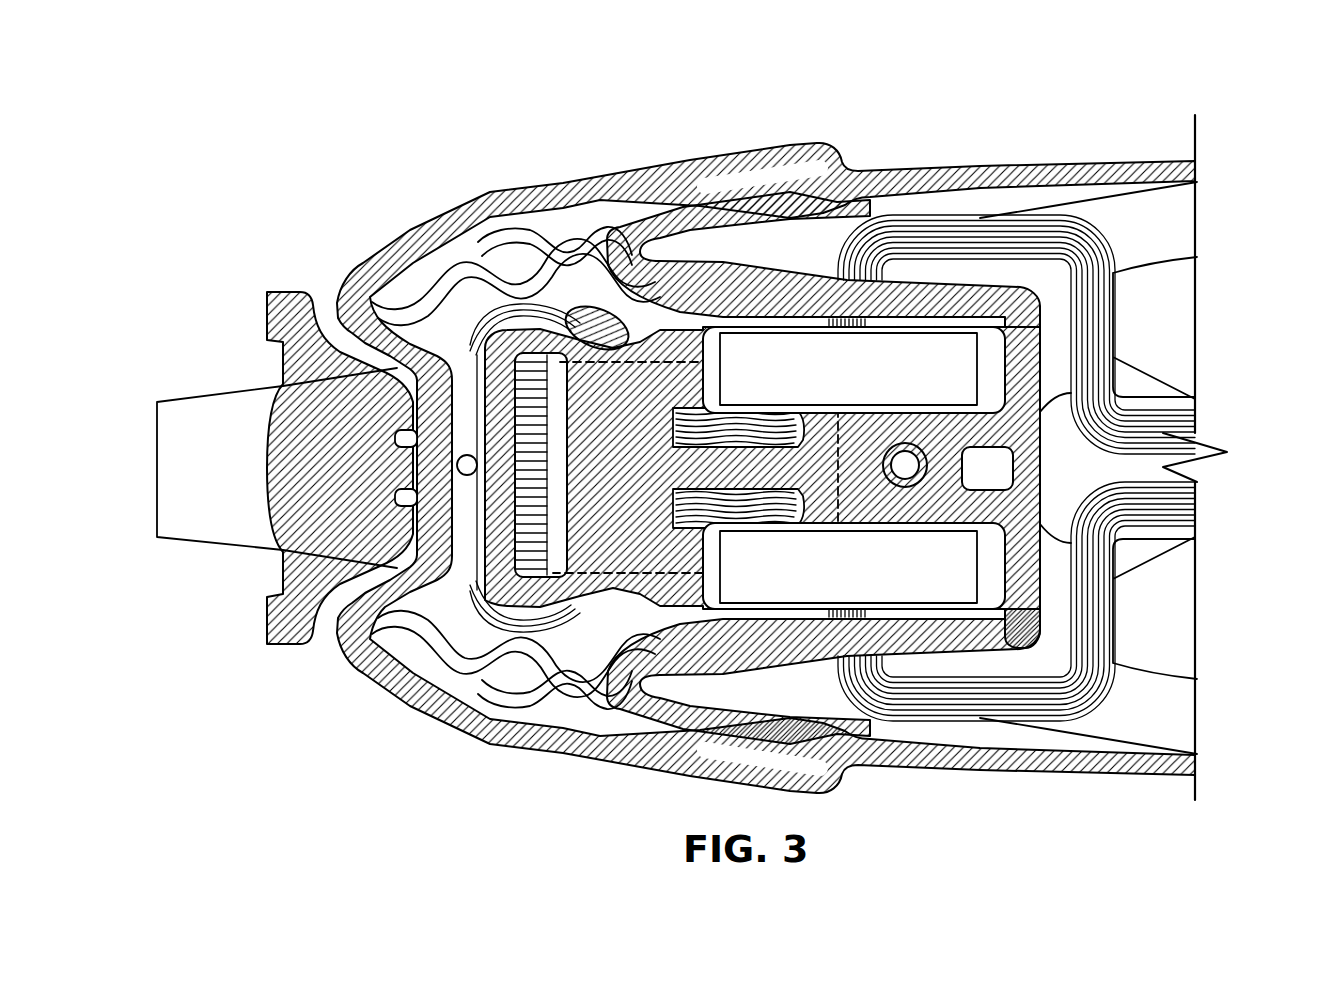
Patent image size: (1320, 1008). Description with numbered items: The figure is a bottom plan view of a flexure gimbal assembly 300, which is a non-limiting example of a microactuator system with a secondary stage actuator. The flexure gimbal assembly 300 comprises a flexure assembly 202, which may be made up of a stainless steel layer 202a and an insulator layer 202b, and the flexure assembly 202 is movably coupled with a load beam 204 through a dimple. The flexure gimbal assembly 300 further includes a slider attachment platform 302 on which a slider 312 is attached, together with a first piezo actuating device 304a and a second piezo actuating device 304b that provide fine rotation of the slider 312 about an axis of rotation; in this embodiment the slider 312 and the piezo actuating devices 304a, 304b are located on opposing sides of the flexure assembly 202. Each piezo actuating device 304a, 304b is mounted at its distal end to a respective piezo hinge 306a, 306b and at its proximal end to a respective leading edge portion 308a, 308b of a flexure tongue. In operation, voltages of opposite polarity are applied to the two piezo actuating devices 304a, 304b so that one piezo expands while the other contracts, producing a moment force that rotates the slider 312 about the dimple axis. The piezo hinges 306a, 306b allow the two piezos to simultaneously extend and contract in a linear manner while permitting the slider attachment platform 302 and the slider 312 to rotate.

The flexure gimbal assembly 300 is at (452, 120).
The flexure assembly 202 is at (397, 240).
The stainless steel layer 202a is at (790, 145).
The insulator layer 202b is at (1180, 222).
The load beam 204 is at (214, 470).
The slider attachment platform 302 is at (530, 650).
The piezo actuating device 304a is at (775, 597).
The piezo actuating device 304b is at (775, 358).
The piezo hinge 306a is at (660, 667).
The piezo hinge 306b is at (702, 316).
The leading edge portion 308a is at (943, 640).
The leading edge portion 308b is at (967, 323).
The slider 312 is at (546, 330).